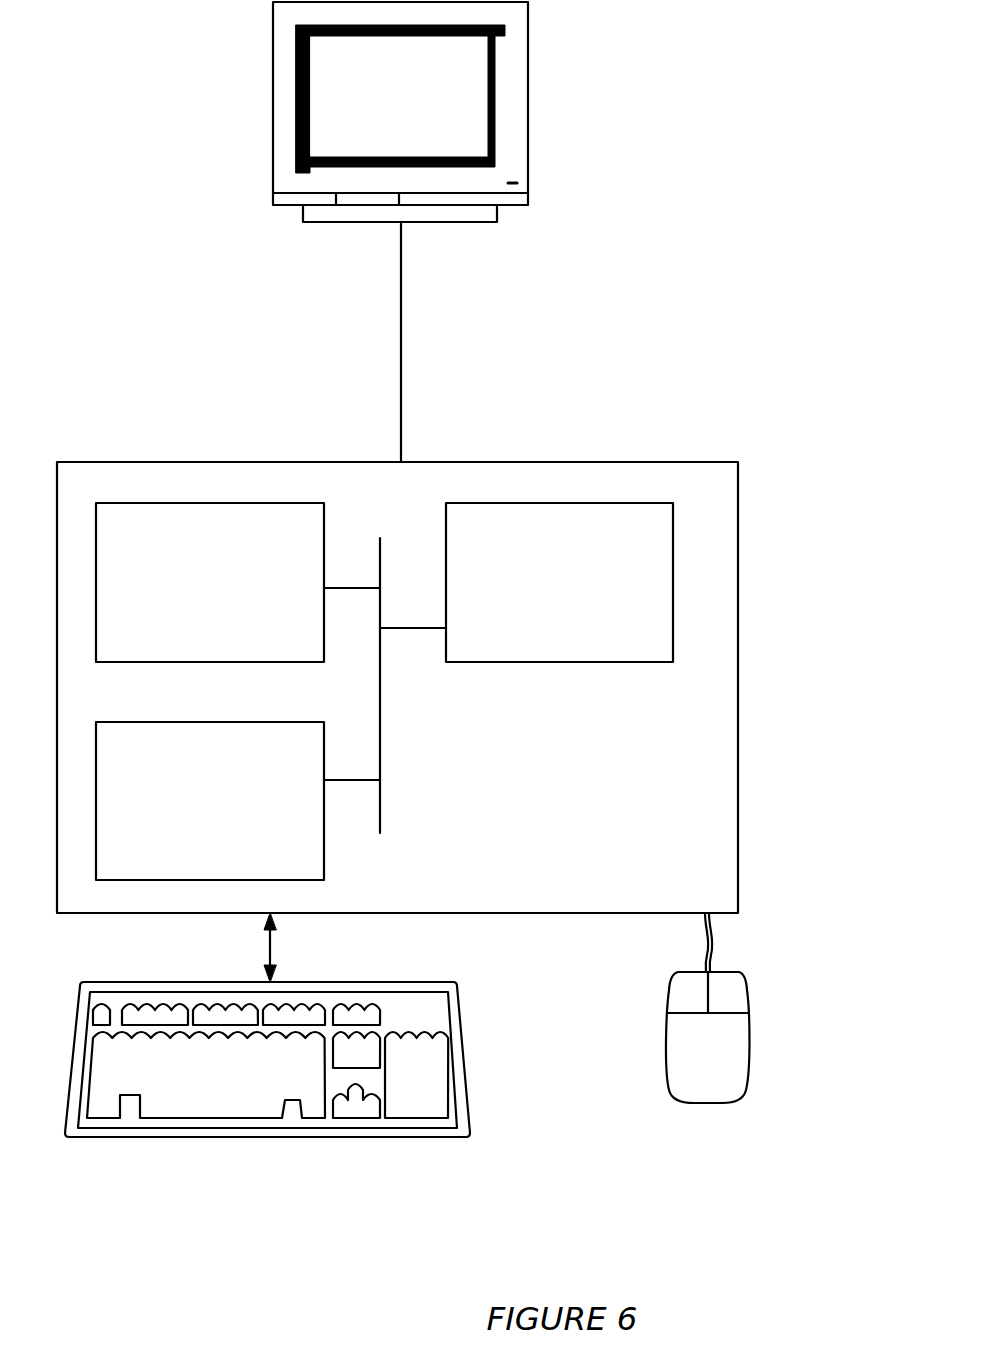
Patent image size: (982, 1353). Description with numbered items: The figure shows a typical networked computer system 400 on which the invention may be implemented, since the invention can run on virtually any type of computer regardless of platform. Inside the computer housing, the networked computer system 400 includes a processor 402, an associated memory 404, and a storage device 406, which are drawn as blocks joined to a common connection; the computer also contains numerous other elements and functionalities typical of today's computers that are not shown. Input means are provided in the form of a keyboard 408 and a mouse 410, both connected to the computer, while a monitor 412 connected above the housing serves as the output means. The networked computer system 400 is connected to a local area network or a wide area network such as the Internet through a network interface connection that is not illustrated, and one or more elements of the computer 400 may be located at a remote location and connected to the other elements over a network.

The networked computer system 400 is at (756, 743).
The processor 402 is at (558, 594).
The memory 404 is at (193, 594).
The storage device 406 is at (188, 813).
The keyboard 408 is at (181, 1098).
The mouse 410 is at (689, 1057).
The monitor 412 is at (375, 115).